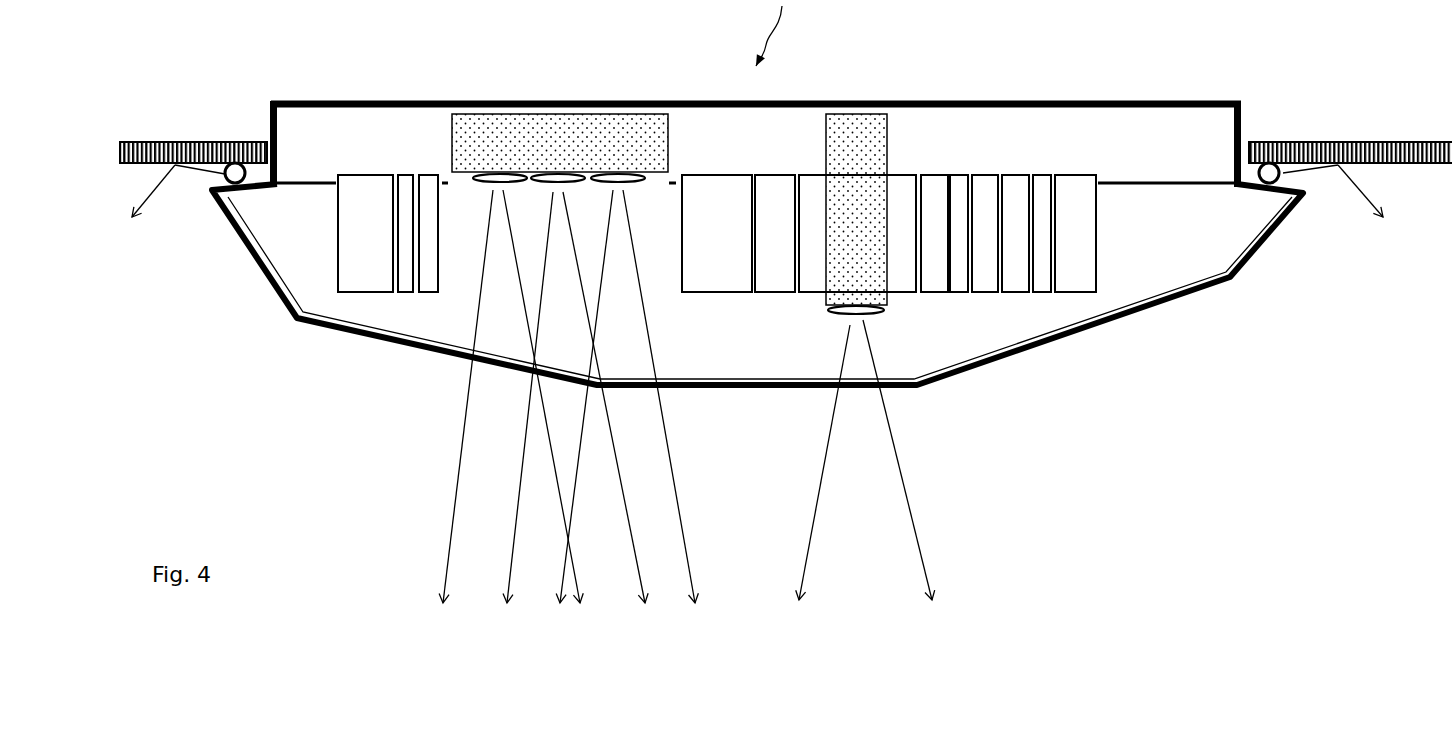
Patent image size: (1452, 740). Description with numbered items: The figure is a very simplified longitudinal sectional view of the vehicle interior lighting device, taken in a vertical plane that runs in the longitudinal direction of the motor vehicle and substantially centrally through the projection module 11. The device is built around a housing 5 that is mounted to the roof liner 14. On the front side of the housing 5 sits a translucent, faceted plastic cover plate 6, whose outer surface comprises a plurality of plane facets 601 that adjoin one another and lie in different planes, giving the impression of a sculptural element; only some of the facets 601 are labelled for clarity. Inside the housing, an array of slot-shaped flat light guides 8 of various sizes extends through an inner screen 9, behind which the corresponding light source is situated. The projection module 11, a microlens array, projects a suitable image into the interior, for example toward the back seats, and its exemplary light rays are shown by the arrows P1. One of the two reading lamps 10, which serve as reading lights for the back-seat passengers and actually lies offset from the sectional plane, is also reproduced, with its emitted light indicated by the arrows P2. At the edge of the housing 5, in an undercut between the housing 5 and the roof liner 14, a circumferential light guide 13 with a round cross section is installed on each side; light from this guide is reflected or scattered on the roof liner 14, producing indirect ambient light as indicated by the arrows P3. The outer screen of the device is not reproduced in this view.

The housing 5 is at (900, 101).
The cover plate 6 is at (343, 332).
The plane facets 601 is at (417, 347).
The flat light guides 8 is at (337, 262).
The inner screen 9 is at (1163, 182).
The reading lamp 10 is at (888, 154).
The projection module 11 is at (669, 152).
The circumferential light guide 13 is at (208, 184).
The roof liner 14 is at (175, 139).
The light rays of the projection module P1 is at (707, 551).
The light rays of the reading lamp P2 is at (812, 527).
The ambient light rays P3 is at (154, 195).